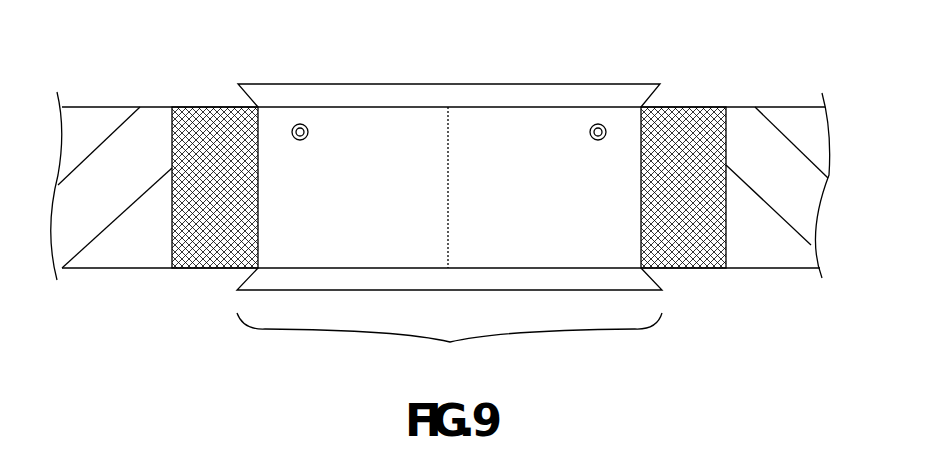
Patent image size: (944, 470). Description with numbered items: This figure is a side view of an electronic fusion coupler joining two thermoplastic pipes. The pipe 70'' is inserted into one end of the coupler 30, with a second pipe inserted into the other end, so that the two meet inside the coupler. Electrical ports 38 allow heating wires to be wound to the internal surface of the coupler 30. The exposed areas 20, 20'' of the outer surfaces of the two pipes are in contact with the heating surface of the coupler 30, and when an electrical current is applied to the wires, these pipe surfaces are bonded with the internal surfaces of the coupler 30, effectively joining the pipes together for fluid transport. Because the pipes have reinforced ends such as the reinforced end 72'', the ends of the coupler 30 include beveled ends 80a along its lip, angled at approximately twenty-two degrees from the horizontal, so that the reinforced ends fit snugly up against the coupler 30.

The exposed area 20 is at (342, 163).
The exposed area 20'' is at (555, 163).
The electrical port 38 is at (297, 121).
The beveled end 80a is at (257, 106).
The pipe 70'' is at (475, 186).
The reinforced end 72'' is at (755, 228).
The coupler 30 is at (449, 345).